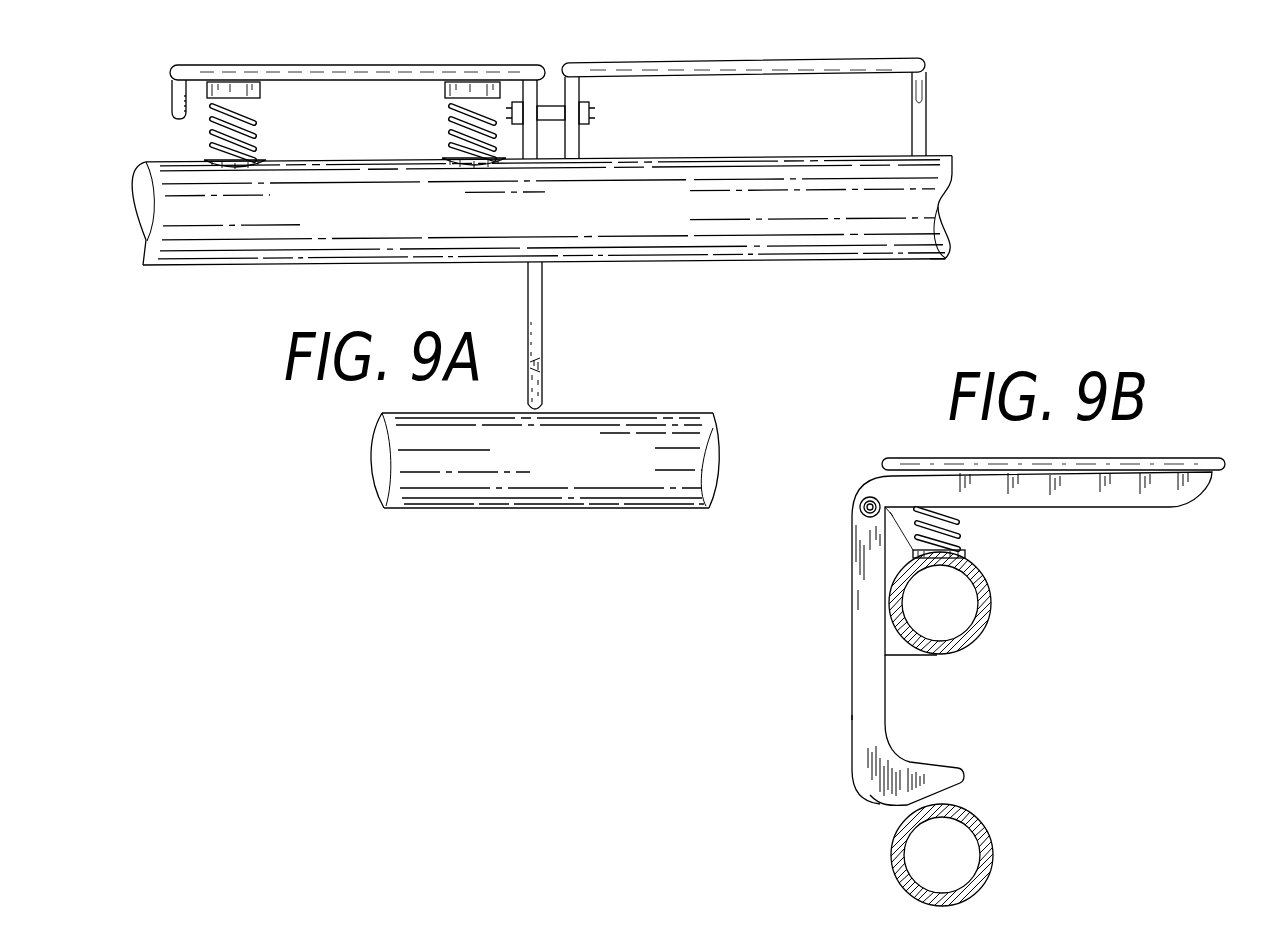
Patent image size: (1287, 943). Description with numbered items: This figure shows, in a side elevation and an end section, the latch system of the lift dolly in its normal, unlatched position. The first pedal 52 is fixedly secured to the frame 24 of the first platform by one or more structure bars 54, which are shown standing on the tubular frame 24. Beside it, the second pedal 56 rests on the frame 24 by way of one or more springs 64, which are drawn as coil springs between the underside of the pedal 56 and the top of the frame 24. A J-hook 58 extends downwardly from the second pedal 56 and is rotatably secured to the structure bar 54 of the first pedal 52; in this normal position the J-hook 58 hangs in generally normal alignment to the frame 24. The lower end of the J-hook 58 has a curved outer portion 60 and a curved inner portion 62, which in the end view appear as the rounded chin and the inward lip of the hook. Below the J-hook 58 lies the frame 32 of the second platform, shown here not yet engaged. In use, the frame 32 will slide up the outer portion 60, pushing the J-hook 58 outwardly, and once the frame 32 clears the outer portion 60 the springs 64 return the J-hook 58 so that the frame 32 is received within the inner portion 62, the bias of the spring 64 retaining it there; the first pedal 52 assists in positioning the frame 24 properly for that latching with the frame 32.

In FIG. 9A, the frame portion 24 is at (784, 250).
In FIG. 9B, the frame portion 24 is at (996, 606).
In FIG. 9A, the frame portion 32 is at (652, 412).
In FIG. 9B, the frame portion 32 is at (986, 835).
In FIG. 9A, the first pedal 52 is at (752, 62).
In FIG. 9A, the structure bar 54 is at (575, 138).
In FIG. 9B, the structure bar 54 is at (890, 534).
In FIG. 9A, the second pedal 56 is at (378, 65).
In FIG. 9B, the second pedal 56 is at (1190, 458).
In FIG. 9A, the J-hook 58 is at (540, 284).
In FIG. 9B, the J-hook 58 is at (866, 676).
In FIG. 9B, the curved outer portion 60 is at (860, 790).
In FIG. 9A, the curved inner portion 62 is at (541, 358).
In FIG. 9B, the curved inner portion 62 is at (900, 748).
In FIG. 9A, the spring 64 is at (256, 118).
In FIG. 9B, the spring 64 is at (962, 530).